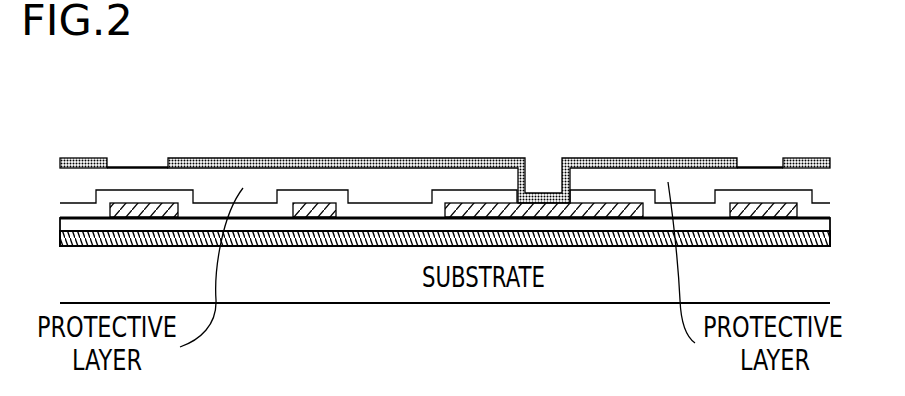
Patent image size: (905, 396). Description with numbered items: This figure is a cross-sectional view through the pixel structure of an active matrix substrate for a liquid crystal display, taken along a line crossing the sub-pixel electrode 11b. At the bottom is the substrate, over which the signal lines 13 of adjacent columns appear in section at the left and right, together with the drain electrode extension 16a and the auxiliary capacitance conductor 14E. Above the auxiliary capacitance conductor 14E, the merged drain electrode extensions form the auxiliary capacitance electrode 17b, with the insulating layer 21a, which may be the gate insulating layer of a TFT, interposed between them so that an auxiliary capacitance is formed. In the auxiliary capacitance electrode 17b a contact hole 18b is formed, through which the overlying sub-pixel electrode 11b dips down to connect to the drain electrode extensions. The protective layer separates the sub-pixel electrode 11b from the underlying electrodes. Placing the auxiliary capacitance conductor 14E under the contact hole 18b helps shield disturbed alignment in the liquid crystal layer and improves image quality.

The sub-pixel electrode 11b is at (398, 158).
The signal line 13 is at (465, 145).
The auxiliary capacitance conductor 14E is at (293, 247).
The drain electrode extension 16a is at (308, 203).
The auxiliary capacitance electrode 17b is at (623, 203).
The contact hole 18b is at (537, 150).
The insulating layer 21a is at (595, 225).